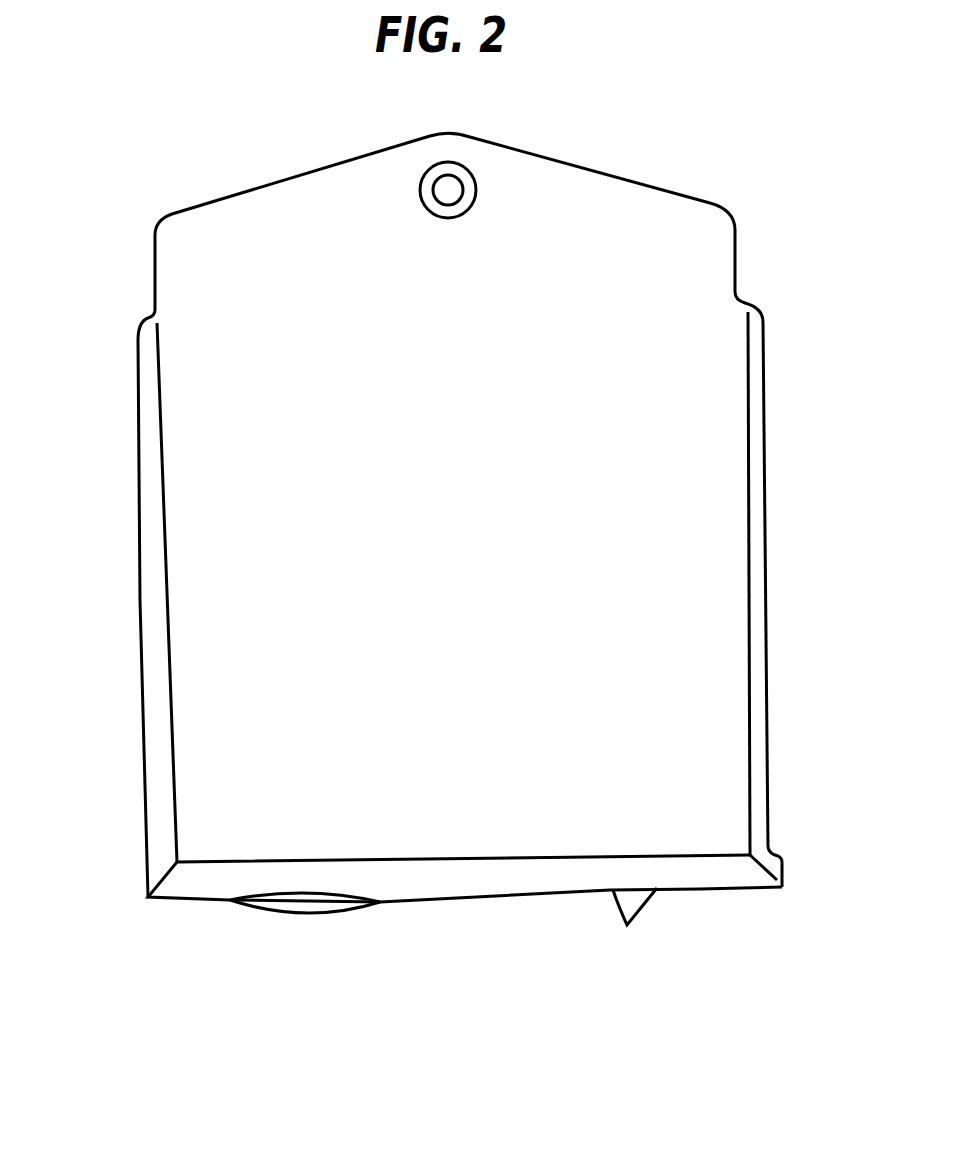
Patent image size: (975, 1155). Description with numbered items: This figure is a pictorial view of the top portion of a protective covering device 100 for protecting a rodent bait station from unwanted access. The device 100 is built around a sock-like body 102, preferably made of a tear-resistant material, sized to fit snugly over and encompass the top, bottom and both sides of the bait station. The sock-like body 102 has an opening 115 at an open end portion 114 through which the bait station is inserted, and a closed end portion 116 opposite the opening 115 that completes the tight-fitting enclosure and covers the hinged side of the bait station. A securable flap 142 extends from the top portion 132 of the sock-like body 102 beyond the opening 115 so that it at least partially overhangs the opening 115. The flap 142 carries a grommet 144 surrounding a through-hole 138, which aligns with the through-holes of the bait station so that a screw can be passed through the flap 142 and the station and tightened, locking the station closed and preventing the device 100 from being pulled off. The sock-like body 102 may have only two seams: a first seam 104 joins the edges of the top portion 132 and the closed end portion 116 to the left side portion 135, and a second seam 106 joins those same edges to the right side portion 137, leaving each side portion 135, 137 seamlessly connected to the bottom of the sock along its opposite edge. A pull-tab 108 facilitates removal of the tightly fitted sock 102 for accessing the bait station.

The protective covering device 100 is at (662, 99).
The sock-like body 102 is at (774, 417).
The first seam 104 is at (748, 517).
The second seam 106 is at (142, 529).
The pull-tab 108 is at (627, 925).
The open end portion 114 is at (132, 343).
The opening 115 is at (137, 305).
The closed end portion 116 is at (701, 900).
The top portion 132 is at (677, 362).
The left side portion 135 is at (757, 648).
The right side portion 137 is at (136, 643).
The through-hole 138 is at (437, 186).
The securable flap 142 is at (683, 228).
The grommet 144 is at (455, 172).